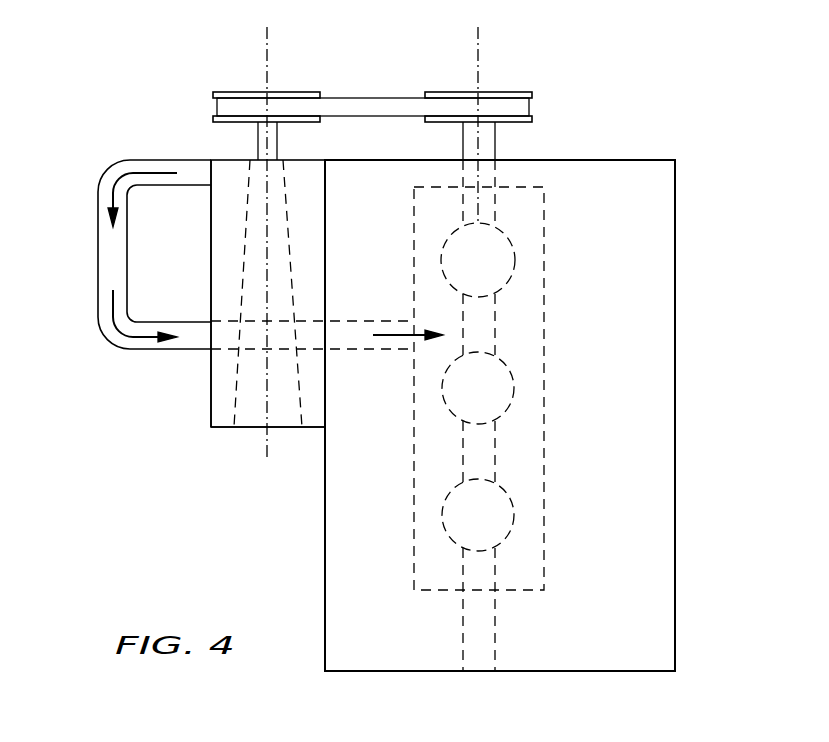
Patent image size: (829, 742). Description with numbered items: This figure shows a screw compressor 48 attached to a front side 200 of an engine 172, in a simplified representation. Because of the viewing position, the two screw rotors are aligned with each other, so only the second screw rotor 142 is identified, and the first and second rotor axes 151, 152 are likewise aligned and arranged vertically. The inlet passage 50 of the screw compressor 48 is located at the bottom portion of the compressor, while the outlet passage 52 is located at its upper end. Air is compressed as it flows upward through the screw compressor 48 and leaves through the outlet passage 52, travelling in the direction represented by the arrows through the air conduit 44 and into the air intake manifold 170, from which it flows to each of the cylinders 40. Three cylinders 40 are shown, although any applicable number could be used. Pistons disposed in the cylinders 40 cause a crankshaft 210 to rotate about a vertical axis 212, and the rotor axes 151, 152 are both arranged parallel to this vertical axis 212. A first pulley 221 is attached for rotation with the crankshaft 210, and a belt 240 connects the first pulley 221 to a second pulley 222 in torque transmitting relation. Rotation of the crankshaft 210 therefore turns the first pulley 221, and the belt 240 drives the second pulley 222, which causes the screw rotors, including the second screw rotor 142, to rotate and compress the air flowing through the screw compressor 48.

The cylinders 40 is at (515, 254).
The air conduit 44 is at (97, 235).
The screw compressor 48 is at (211, 386).
The inlet passage 50 is at (248, 427).
The outlet passage 52 is at (222, 164).
The second screw rotor 142 is at (230, 402).
The first rotor axis 151 is at (267, 34).
The second rotor axis 152 is at (267, 78).
The air intake manifold 170 is at (543, 300).
The engine 172 is at (675, 206).
The front side 200 is at (325, 562).
The crankshaft 210 is at (496, 645).
The vertical axis 212 is at (478, 40).
The first pulley 221 is at (515, 92).
The second pulley 222 is at (240, 92).
The belt 240 is at (373, 102).